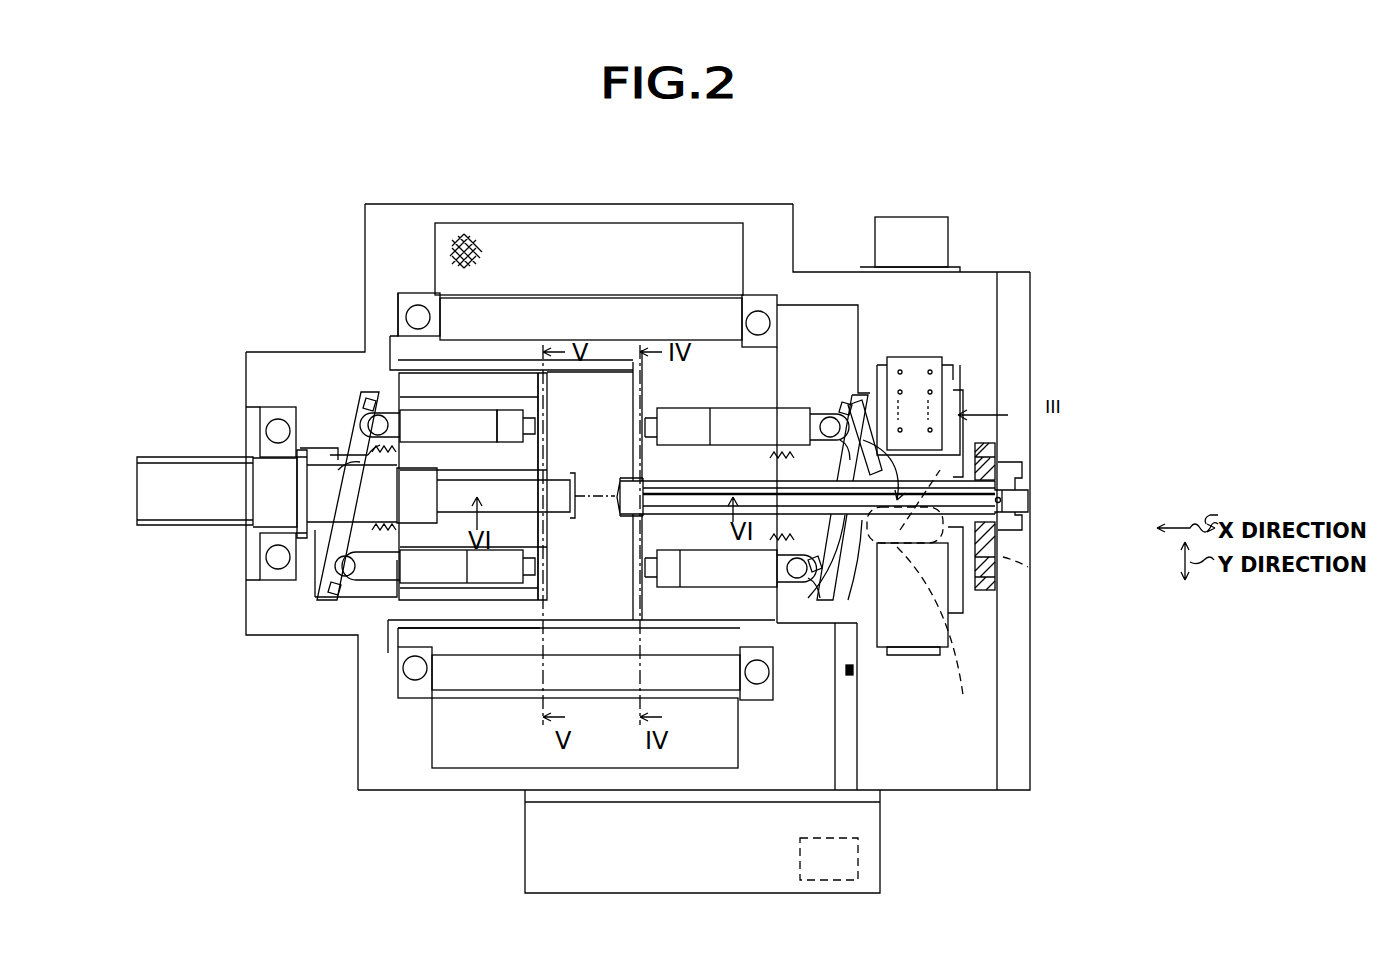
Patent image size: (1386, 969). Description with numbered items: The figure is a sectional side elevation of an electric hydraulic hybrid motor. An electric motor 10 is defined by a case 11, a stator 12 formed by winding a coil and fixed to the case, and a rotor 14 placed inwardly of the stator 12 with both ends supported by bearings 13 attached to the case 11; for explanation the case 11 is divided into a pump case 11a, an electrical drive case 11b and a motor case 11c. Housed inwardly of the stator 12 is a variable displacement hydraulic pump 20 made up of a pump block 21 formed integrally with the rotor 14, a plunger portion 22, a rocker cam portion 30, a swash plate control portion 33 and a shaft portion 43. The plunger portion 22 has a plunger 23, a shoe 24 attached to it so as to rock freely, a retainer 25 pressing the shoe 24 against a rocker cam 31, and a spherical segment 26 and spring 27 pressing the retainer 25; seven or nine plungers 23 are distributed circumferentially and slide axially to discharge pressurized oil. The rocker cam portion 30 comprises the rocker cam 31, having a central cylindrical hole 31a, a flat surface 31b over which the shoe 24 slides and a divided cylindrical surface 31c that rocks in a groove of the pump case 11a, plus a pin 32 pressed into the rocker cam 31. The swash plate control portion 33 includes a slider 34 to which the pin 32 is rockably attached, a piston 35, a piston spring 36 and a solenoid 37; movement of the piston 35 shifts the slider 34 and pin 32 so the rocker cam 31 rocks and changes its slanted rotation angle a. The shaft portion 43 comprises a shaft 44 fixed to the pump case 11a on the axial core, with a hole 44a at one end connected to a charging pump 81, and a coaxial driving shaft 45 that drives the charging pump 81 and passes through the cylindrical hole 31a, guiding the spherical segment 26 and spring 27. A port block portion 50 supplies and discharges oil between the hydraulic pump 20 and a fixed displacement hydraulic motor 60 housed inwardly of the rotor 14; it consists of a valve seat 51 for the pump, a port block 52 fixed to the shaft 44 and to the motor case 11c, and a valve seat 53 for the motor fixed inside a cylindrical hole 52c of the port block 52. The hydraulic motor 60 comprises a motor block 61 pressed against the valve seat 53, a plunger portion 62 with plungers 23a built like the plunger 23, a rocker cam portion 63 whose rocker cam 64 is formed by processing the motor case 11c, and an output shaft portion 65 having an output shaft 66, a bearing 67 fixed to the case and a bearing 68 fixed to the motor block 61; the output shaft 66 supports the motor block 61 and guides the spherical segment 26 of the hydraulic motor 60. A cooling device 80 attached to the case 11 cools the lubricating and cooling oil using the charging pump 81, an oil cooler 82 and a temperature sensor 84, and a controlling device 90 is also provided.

The electric motor 10 is at (621, 205).
The case 11 is at (476, 216).
The pump case 11a is at (986, 792).
The electrical drive case 11b is at (672, 216).
The motor case 11c is at (262, 612).
The stator 12 is at (527, 240).
The bearings 13 is at (756, 308).
The rotor 14 is at (590, 300).
The variable displacement hydraulic pump 20 is at (837, 390).
The cylinder block for a pump 21 is at (783, 365).
The plunger portion 22 is at (813, 400).
The plunger 23 is at (708, 574).
The plunger 23a is at (480, 437).
The shoe 24 is at (800, 585).
The retainer 25 is at (377, 412).
The spherical segment 26 is at (333, 455).
The spring 27 is at (377, 466).
The rocker cam portion 30 is at (880, 652).
The rocker cam 31 is at (862, 570).
The cylindrical hole 31a is at (826, 672).
The flat surface 31b is at (795, 448).
The divided cylindrical surface 31c is at (924, 592).
The pin 32 is at (1000, 567).
The swash plate control portion 33 is at (947, 358).
The slider 34 is at (918, 652).
The piston 35 is at (950, 392).
The piston spring 36 is at (932, 372).
The solenoid 37 is at (905, 240).
The shaft portion 43 is at (998, 462).
The shaft 44 is at (1028, 508).
The hole 44a is at (1003, 498).
The driving shaft 45 is at (998, 540).
The port block portion 50 is at (605, 358).
The valve seat for the hydraulic pump 51 is at (622, 666).
The port block 52 is at (597, 602).
The cylindrical hole 52c is at (462, 680).
The valve seat for the hydraulic motor 53 is at (543, 578).
The fixed displacement hydraulic motor 60 is at (338, 405).
The cylinder block for a motor 61 is at (407, 590).
The plunger portion 62 is at (350, 593).
The rocker cam portion 63 is at (312, 570).
The rocker cam 64 is at (361, 403).
The output shaft portion 65 is at (180, 447).
The output shaft 66 is at (173, 497).
The bearing 67 is at (277, 557).
The bearing 68 is at (562, 516).
The cooling device 80 is at (724, 895).
The charging pump 81 is at (1018, 590).
The oil cooler 82 is at (570, 893).
The temperature sensor 84 is at (862, 680).
The controlling device 90 is at (830, 882).
The slanted rotation angle a is at (975, 445).